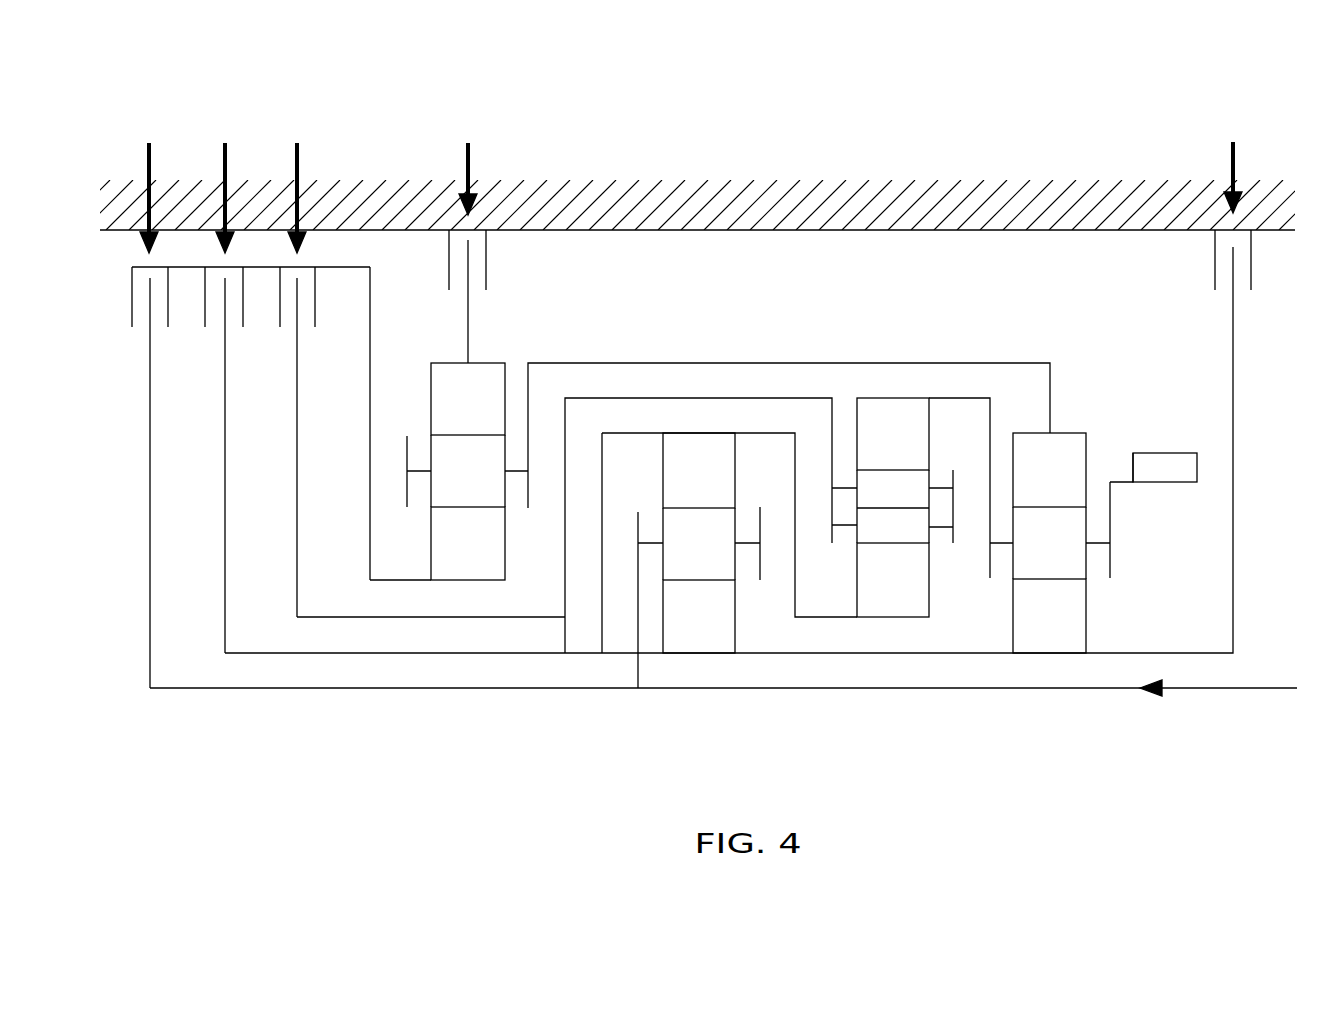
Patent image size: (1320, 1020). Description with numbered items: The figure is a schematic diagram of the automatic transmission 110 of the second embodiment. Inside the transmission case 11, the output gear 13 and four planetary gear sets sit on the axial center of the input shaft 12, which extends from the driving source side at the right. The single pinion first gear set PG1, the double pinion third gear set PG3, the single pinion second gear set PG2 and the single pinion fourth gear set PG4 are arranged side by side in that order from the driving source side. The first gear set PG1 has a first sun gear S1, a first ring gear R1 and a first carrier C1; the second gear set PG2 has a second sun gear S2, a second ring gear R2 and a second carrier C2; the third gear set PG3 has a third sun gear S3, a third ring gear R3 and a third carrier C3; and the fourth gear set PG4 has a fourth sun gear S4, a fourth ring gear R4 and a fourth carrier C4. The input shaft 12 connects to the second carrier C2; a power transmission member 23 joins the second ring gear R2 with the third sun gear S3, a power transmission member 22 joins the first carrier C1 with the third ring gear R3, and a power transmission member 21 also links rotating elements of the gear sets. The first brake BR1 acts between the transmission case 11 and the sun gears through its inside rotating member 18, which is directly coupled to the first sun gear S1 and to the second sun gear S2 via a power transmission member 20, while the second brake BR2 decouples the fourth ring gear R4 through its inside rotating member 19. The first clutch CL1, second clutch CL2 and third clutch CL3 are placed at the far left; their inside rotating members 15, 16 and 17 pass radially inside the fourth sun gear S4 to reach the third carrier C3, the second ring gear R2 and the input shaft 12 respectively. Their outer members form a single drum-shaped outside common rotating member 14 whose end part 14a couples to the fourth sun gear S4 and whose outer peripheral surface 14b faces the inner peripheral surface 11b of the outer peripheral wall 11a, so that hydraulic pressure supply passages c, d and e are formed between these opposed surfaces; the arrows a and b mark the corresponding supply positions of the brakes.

The automatic transmission 110 is at (1138, 112).
The transmission case 11 is at (865, 177).
The outer peripheral wall 11a is at (755, 180).
The inner peripheral surface 11b is at (827, 230).
The input shaft 12 is at (1240, 688).
The output gear 13 is at (1170, 453).
The outside common rotating member 14 is at (288, 495).
The end part 14a is at (408, 580).
The outer peripheral surface 14b is at (343, 267).
The inside rotating member 15 is at (563, 617).
The inside rotating member 16 is at (508, 653).
The inside rotating member 17 is at (458, 688).
The inside rotating member 18 is at (1233, 520).
The inside rotating member 19 is at (468, 312).
The power transmission member 20 is at (960, 653).
The power transmission member 21 is at (772, 362).
The power transmission member 22 is at (965, 398).
The power transmission member 23 is at (780, 433).
The first brake BR1 is at (1215, 262).
The second brake BR2 is at (486, 265).
The first clutch CL1 is at (315, 327).
The second clutch CL2 is at (243, 327).
The third clutch CL3 is at (168, 327).
The first gear set PG1 is at (1082, 513).
The second gear set PG2 is at (707, 498).
The third gear set PG3 is at (913, 462).
The fourth gear set PG4 is at (488, 442).
The first ring gear R1 is at (1049, 470).
The second ring gear R2 is at (699, 470).
The third ring gear R3 is at (893, 434).
The fourth ring gear R4 is at (468, 399).
The first sun gear S1 is at (1049, 580).
The second sun gear S2 is at (699, 580).
The third sun gear S3 is at (893, 543).
The fourth sun gear S4 is at (468, 507).
The first carrier C1 is at (1109, 535).
The second carrier C2 is at (707, 597).
The third carrier C3 is at (949, 525).
The fourth carrier C4 is at (409, 489).
The hydraulic actuator position a is at (1233, 164).
The hydraulic actuator position b is at (468, 165).
The hydraulic pressure supply passage c is at (297, 184).
The hydraulic pressure supply passage d is at (225, 184).
The hydraulic pressure supply passage e is at (149, 184).